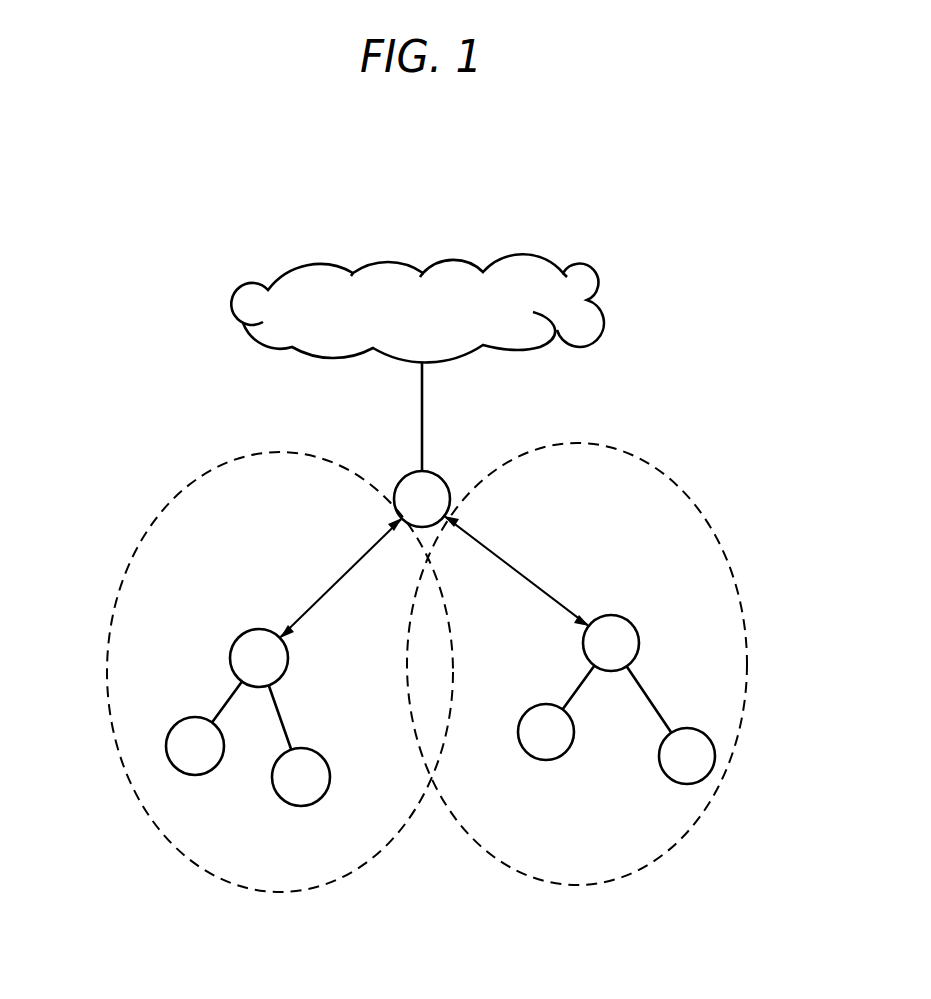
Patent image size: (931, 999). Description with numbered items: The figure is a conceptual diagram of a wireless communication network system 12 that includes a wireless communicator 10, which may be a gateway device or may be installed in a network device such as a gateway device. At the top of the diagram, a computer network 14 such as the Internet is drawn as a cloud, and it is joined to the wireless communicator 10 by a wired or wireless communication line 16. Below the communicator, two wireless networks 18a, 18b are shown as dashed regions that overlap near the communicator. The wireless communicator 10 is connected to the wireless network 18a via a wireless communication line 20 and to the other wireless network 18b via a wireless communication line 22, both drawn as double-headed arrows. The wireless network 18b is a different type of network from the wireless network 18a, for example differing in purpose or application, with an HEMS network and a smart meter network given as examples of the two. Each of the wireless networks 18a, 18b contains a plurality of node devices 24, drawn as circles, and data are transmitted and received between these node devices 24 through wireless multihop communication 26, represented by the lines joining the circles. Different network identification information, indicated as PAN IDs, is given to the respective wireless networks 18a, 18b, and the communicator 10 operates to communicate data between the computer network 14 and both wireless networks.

The wireless communicator 10 is at (440, 473).
The wireless communication network system 12 is at (463, 978).
The computer network 14 is at (608, 305).
The communication line 16 is at (423, 395).
The wireless network 18a is at (137, 550).
The wireless network 18b is at (732, 573).
The wireless communication line 20 is at (340, 578).
The wireless communication line 22 is at (515, 565).
The node device 24 is at (237, 635).
The wireless multihop communication 26 is at (224, 702).